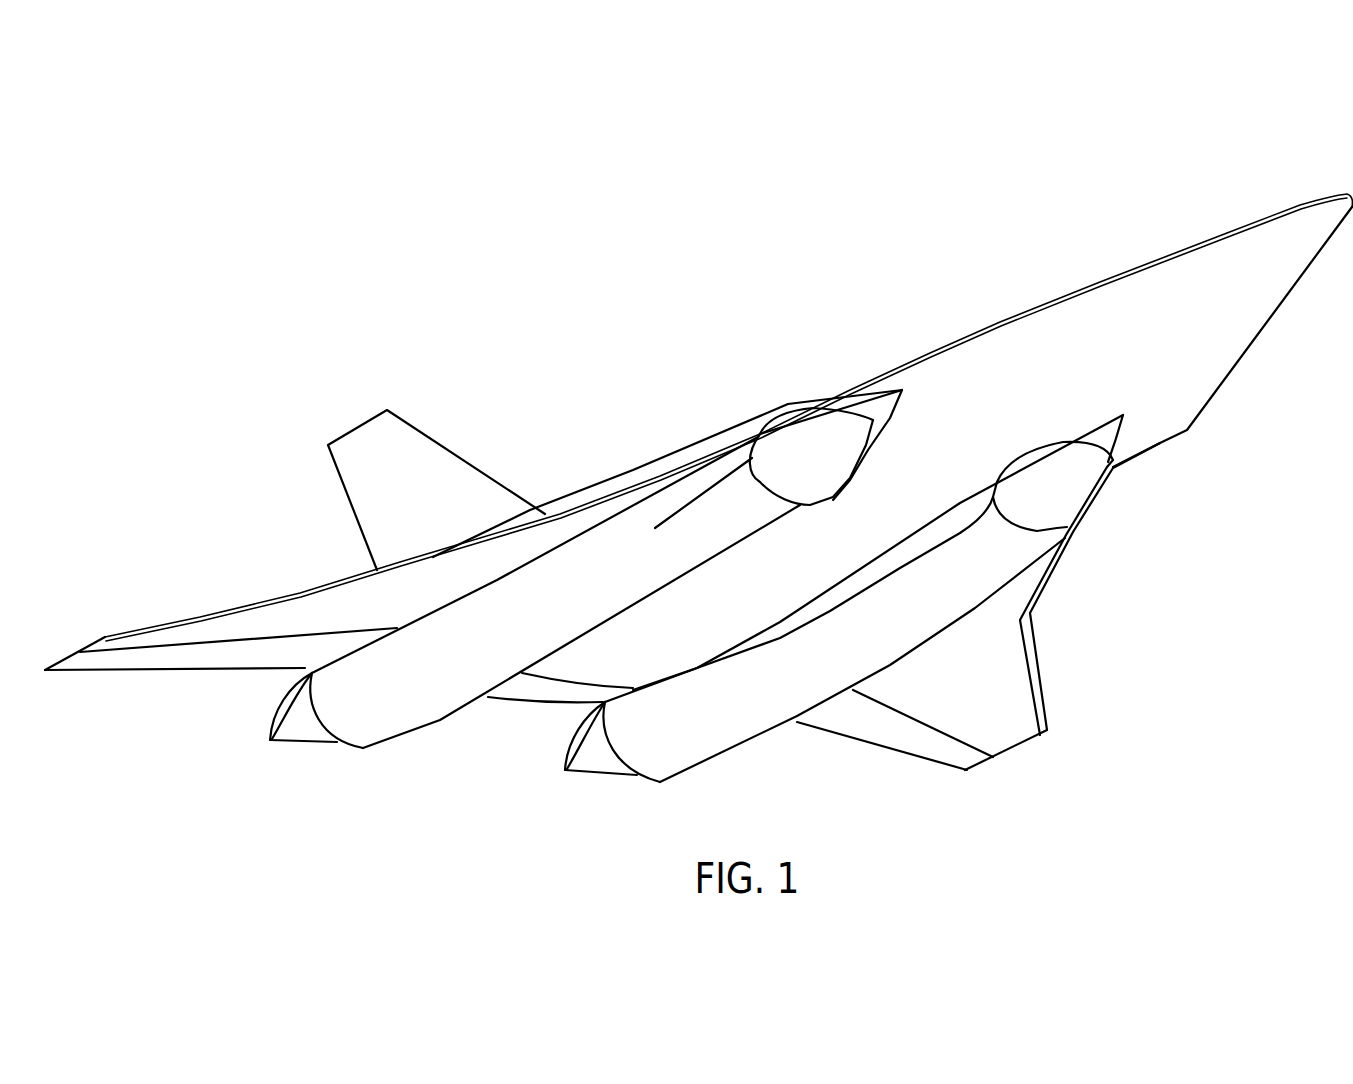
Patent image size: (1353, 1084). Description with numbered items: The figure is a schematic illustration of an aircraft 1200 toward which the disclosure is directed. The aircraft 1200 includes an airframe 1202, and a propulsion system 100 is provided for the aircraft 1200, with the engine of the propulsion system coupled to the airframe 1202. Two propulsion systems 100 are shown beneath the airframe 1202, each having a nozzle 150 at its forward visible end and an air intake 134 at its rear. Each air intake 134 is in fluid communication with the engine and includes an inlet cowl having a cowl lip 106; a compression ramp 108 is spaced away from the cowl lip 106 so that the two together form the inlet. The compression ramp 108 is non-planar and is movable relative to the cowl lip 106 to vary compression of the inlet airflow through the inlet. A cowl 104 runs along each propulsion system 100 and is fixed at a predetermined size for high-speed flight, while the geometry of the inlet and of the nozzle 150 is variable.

The aircraft 1200 is at (1220, 193).
The airframe 1202 is at (992, 320).
The propulsion system 100 is at (475, 717).
The nozzle 150 is at (298, 730).
The cowl 104 is at (668, 507).
The cowl lip 106 is at (815, 503).
The compression ramp 108 is at (892, 407).
The air intake 134 is at (808, 440).